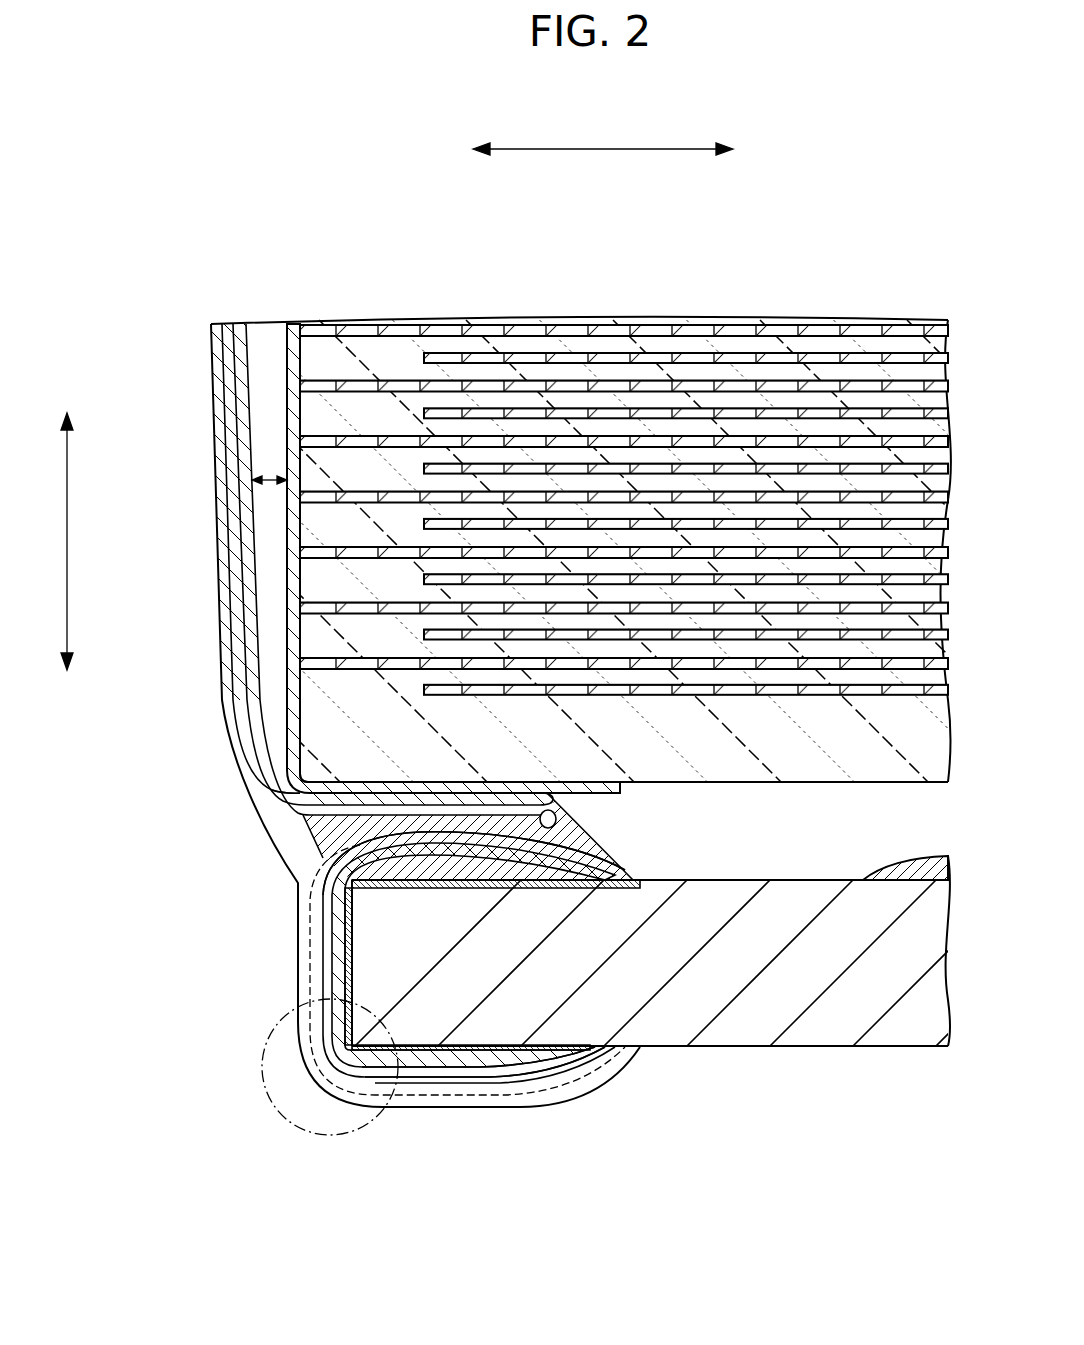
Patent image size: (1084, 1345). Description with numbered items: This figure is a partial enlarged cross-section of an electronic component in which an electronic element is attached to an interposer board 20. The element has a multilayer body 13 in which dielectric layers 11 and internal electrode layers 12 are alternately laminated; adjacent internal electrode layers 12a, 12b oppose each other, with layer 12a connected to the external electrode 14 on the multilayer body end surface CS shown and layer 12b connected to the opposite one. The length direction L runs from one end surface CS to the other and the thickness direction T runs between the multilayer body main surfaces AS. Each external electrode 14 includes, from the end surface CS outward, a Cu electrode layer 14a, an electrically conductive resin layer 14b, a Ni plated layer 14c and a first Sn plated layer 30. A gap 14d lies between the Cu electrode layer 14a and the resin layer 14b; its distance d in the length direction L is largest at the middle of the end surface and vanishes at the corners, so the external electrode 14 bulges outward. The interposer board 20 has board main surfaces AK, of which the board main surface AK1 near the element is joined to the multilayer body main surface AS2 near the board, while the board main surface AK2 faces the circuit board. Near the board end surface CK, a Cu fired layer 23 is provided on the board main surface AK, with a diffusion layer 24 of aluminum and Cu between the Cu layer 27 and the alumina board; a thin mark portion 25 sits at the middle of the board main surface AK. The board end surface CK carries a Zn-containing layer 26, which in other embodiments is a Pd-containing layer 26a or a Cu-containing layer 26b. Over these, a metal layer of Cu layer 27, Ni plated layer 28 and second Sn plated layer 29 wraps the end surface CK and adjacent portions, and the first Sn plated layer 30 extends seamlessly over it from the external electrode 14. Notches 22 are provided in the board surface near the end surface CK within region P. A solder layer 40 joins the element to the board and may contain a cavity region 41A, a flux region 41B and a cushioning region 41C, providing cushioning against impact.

The dielectric layer 11 is at (692, 378).
The internal electrode layer 12 is at (624, 450).
The internal electrode layer 12a is at (565, 378).
The internal electrode layer 12b is at (558, 260).
The multilayer body 13 is at (542, 470).
The external electrode 14 is at (405, 770).
The Cu electrode layer 14a is at (290, 600).
The electrically conductive resin layer 14b is at (237, 565).
The Ni plated layer 14c is at (230, 520).
The gap 14d is at (273, 648).
The interposer board 20 is at (718, 983).
The notch 22 is at (360, 967).
The Cu fired layer 23 is at (350, 858).
The diffusion layer 24 is at (567, 1047).
The mark portion 25 is at (893, 858).
The Zn-containing layer 26 is at (232, 966).
The Pd-containing layer 26a is at (232, 966).
The Cu-containing layer 26b is at (353, 937).
The Cu layer 27 is at (563, 1063).
The Ni plated layer 28 is at (553, 1077).
The second Sn plated layer 29 is at (552, 1084).
The first Sn plated layer 30 is at (212, 474).
The solder layer 40 is at (400, 839).
The cavity region 41A is at (568, 818).
The flux region 41B is at (363, 890).
The cushioning region 41C is at (287, 790).
The multilayer body main surface AS is at (784, 818).
The multilayer body main surface in the vicinity of the board AS2 is at (663, 783).
The board main surface AK is at (650, 977).
The board main surface in the vicinity of the electronic element AK1 is at (757, 878).
The board main surface in the vicinity of the circuit board AK2 is at (820, 1050).
The multilayer body end surface CS is at (290, 678).
The board end surface CK is at (327, 1027).
The region P is at (300, 1076).
The length direction L is at (603, 135).
The thickness direction T is at (57, 541).
The distance d is at (269, 462).